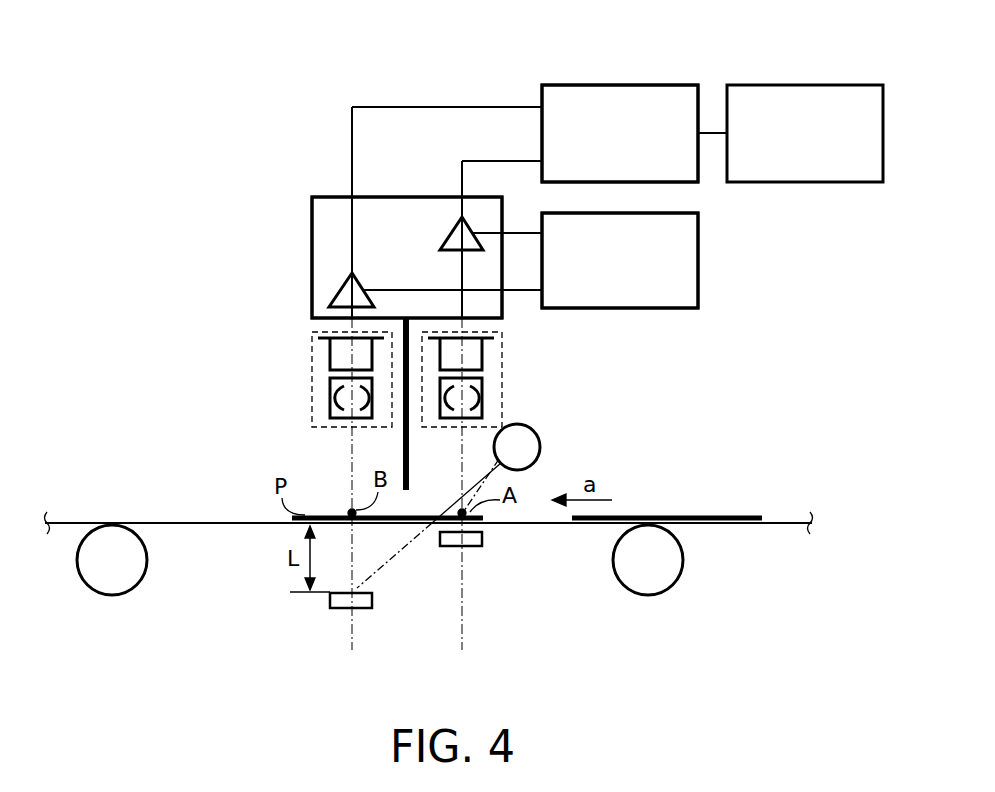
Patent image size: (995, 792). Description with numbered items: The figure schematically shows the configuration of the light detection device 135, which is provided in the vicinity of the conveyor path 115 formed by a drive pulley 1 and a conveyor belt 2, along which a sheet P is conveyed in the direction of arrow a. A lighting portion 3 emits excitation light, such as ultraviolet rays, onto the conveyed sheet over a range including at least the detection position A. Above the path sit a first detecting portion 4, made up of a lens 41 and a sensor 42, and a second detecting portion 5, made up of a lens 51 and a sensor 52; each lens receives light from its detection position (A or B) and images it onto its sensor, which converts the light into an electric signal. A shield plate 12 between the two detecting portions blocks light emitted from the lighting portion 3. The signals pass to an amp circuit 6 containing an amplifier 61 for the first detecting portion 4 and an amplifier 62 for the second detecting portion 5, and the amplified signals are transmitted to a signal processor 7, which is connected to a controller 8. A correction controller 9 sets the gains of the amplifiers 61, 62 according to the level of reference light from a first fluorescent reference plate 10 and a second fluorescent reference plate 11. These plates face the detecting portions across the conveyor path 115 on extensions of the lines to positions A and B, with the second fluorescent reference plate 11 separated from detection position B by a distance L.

The drive pulley 1 is at (82, 578).
The conveyor belt 2 is at (201, 522).
The lighting portion 3 is at (541, 447).
The first detecting portion 4 is at (502, 370).
The lens 41 is at (482, 400).
The sensor 42 is at (482, 352).
The second detecting portion 5 is at (312, 370).
The lens 51 is at (330, 400).
The sensor 52 is at (330, 352).
The amp circuit 6 is at (312, 256).
The amplifier 61 is at (450, 228).
The amplifier 62 is at (364, 292).
The signal processor 7 is at (637, 84).
The controller 8 is at (826, 84).
The correction controller 9 is at (699, 258).
The first fluorescent reference plate 10 is at (483, 538).
The second fluorescent reference plate 11 is at (330, 600).
The shield plate 12 is at (403, 452).
The conveyor path 115 is at (216, 534).
The light detection device 135 is at (448, 64).